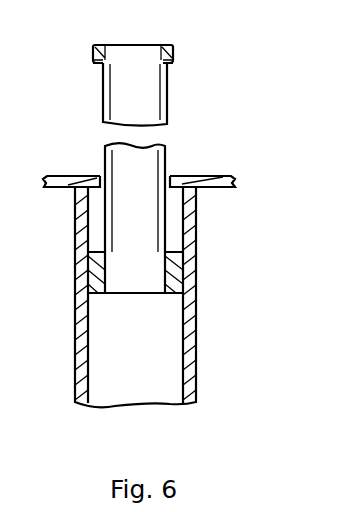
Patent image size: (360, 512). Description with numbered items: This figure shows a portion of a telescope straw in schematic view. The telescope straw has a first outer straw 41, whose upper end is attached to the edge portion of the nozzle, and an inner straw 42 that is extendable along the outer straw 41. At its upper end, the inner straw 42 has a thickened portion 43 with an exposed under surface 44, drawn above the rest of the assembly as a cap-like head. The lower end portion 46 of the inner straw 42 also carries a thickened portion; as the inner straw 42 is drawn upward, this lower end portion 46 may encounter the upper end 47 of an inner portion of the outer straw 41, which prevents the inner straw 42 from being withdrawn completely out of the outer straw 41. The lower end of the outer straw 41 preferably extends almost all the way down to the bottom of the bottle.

The outer straw 41 is at (190, 327).
The inner straw 42 is at (165, 105).
The thickened portion 43 is at (175, 53).
The exposed under surface 44 is at (170, 67).
The lower end portion 46 is at (97, 275).
The upper end of inner portion of outer straw 47 is at (185, 185).